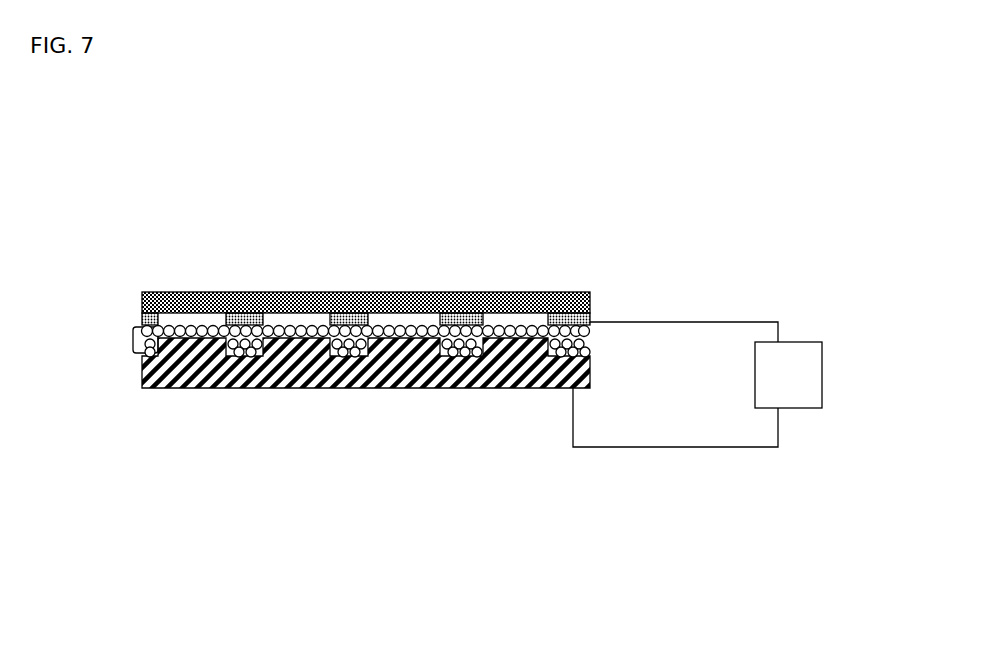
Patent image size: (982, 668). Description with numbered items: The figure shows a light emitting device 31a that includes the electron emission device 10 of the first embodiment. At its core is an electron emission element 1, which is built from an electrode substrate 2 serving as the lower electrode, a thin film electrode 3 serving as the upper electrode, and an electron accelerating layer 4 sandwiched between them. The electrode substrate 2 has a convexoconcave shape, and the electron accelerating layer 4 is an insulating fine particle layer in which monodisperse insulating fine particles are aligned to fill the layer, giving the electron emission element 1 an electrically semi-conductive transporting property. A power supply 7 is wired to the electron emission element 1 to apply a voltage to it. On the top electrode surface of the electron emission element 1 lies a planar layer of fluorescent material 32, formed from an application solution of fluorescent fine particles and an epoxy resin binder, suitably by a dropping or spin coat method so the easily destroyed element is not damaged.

The light emitting device 31a is at (130, 154).
The fluorescent material 32 is at (370, 292).
The electron emission element 1 is at (83, 303).
The thin film electrode 3 is at (140, 313).
The electron accelerating layer 4 is at (133, 340).
The electrode substrate 2 is at (140, 378).
The power supply 7 is at (822, 377).
The electron emission device 10 is at (541, 413).